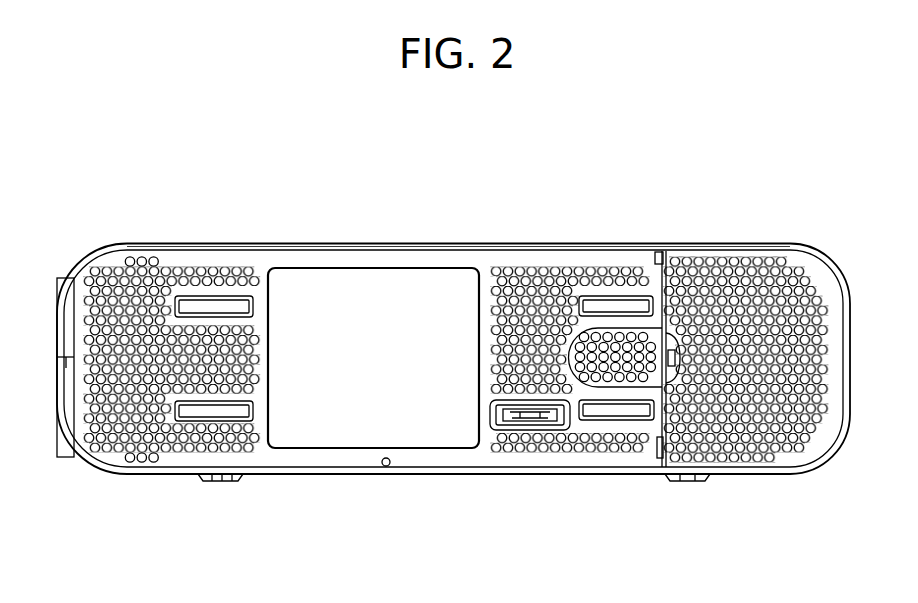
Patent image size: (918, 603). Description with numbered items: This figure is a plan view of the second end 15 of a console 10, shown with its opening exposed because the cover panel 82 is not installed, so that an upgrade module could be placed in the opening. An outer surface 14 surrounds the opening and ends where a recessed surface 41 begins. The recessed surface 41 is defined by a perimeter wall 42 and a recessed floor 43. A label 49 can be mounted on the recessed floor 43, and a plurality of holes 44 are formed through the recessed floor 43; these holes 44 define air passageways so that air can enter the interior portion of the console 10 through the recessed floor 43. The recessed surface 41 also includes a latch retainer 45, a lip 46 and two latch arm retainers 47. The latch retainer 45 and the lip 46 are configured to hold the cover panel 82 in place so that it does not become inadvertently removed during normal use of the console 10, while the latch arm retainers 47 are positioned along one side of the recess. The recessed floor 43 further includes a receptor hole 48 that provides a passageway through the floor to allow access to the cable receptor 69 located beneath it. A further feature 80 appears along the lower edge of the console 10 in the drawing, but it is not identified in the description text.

The console 10 is at (410, 233).
The surface 14 is at (788, 246).
The second end 15 is at (146, 481).
The recessed surface 41 is at (366, 262).
The perimeter wall 42 is at (386, 467).
The recessed floor 43 is at (282, 262).
The holes 44 is at (211, 268).
The latch retainer 45 is at (656, 337).
The lip 46 is at (70, 326).
The latch arm retainers 47 is at (655, 252).
The receptor hole 48 is at (489, 417).
The label 49 is at (428, 434).
The cable receptor 69 is at (492, 448).
The bottom foot 80 is at (284, 476).
The cover panel 82 is at (228, 482).